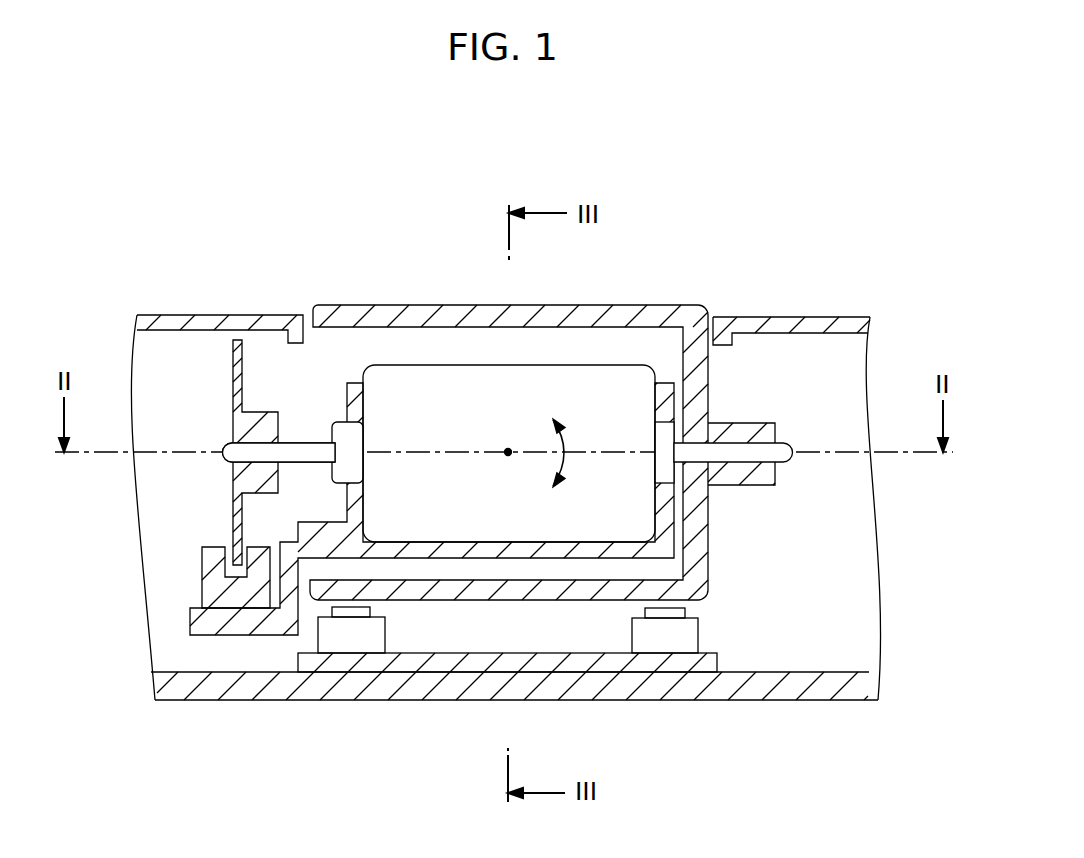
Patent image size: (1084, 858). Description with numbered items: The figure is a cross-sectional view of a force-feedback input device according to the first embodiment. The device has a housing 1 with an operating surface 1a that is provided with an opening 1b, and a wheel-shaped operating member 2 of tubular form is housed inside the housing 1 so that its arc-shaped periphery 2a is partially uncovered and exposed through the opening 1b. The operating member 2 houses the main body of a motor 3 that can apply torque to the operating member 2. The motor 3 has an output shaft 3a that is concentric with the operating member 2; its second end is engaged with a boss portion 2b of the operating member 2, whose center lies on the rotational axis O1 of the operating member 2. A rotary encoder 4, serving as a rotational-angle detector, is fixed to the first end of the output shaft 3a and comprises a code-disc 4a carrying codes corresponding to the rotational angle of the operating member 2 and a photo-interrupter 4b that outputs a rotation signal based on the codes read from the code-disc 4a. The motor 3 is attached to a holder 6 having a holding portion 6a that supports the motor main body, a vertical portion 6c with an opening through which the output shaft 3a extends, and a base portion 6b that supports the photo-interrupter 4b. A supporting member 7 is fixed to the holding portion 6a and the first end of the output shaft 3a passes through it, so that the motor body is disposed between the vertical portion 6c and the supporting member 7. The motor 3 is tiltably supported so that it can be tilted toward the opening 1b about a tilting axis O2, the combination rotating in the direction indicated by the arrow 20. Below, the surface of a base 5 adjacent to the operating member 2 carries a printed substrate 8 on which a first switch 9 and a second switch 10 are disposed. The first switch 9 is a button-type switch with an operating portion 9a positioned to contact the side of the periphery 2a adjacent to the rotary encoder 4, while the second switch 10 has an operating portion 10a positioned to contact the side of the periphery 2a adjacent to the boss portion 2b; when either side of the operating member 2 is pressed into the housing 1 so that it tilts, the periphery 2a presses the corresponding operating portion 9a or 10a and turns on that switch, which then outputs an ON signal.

The housing 1 is at (503, 274).
The operating surface 1a is at (818, 317).
The opening 1b is at (712, 340).
The operating member 2 is at (550, 415).
The periphery 2a is at (432, 305).
The boss portion 2b is at (762, 487).
The motor 3 is at (528, 387).
The output shaft 3a is at (791, 466).
The rotary encoder 4 is at (206, 474).
The code-disc 4a is at (233, 505).
The photo-interrupter 4b is at (202, 590).
The base 5 is at (445, 700).
The holder 6 is at (479, 569).
The holding portion 6a is at (543, 552).
The base portion 6b is at (200, 635).
The vertical portion 6c is at (698, 394).
The supporting member 7 is at (347, 396).
The printed substrate 8 is at (603, 672).
The first switch 9 is at (389, 687).
The operating portion 9a is at (370, 612).
The second switch 10 is at (713, 684).
The operating portion 10a is at (688, 612).
The arrow 20 is at (563, 447).
The rotational axis O1 is at (818, 445).
The tilting axis O2 is at (508, 450).